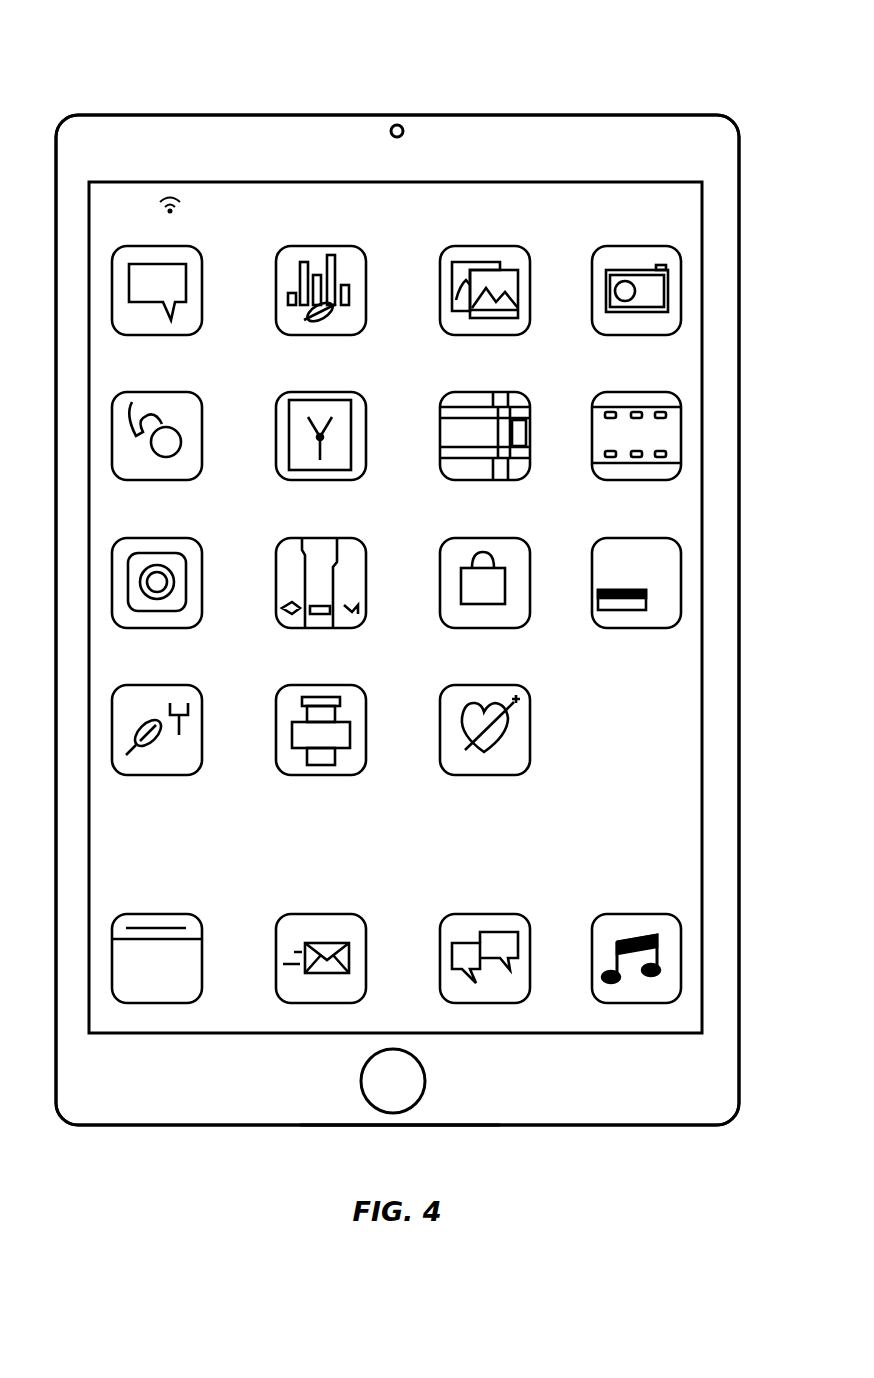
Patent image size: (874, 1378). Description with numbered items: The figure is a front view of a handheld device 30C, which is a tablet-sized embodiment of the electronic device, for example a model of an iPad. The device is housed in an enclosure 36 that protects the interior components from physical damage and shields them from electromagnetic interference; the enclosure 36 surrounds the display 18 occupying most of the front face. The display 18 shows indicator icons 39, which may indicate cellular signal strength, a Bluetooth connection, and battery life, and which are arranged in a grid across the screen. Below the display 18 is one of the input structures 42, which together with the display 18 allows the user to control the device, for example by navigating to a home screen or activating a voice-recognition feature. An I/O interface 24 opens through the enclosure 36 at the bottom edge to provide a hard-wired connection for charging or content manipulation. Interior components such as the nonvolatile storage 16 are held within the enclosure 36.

The handheld device 30C is at (66, 78).
The nonvolatile storage 16 is at (154, 114).
The enclosure 36 is at (656, 114).
The display 18 is at (703, 778).
The indicator icons 39 is at (412, 238).
The input structures 42 is at (426, 1081).
The I/O interface 24 is at (396, 1127).